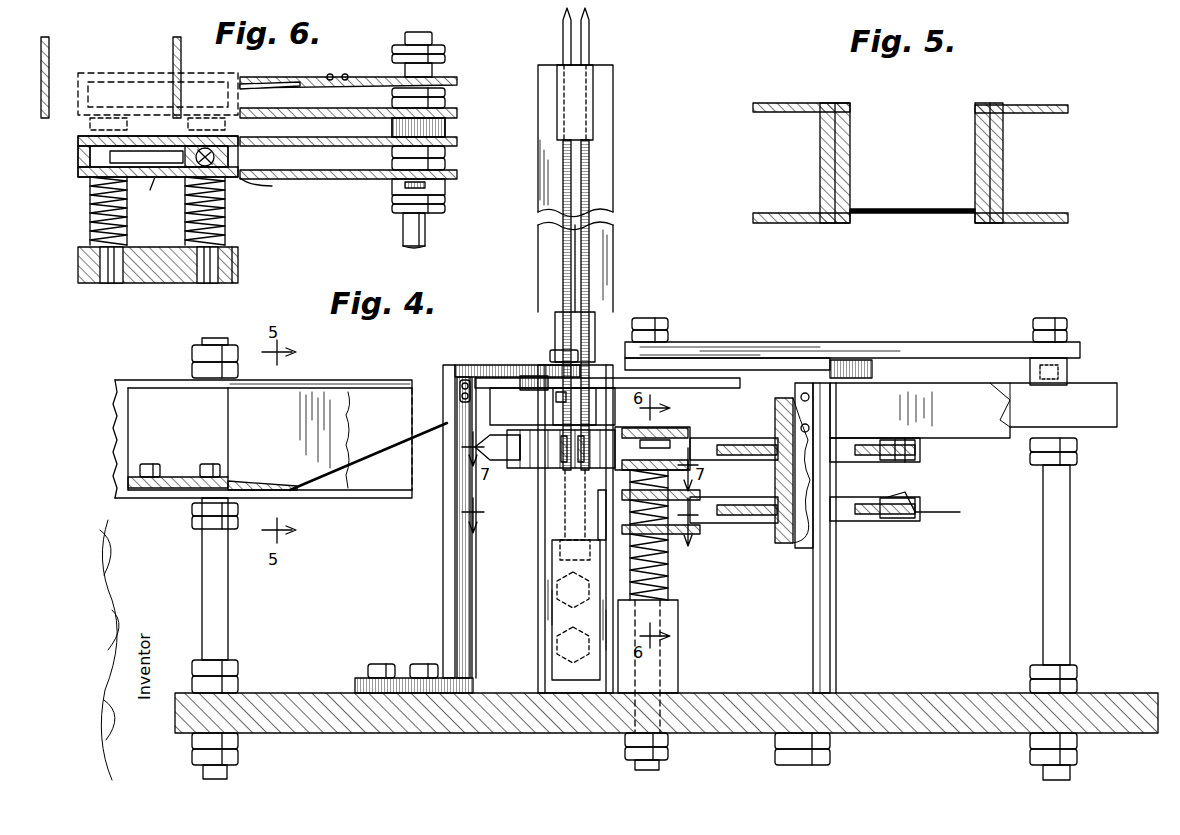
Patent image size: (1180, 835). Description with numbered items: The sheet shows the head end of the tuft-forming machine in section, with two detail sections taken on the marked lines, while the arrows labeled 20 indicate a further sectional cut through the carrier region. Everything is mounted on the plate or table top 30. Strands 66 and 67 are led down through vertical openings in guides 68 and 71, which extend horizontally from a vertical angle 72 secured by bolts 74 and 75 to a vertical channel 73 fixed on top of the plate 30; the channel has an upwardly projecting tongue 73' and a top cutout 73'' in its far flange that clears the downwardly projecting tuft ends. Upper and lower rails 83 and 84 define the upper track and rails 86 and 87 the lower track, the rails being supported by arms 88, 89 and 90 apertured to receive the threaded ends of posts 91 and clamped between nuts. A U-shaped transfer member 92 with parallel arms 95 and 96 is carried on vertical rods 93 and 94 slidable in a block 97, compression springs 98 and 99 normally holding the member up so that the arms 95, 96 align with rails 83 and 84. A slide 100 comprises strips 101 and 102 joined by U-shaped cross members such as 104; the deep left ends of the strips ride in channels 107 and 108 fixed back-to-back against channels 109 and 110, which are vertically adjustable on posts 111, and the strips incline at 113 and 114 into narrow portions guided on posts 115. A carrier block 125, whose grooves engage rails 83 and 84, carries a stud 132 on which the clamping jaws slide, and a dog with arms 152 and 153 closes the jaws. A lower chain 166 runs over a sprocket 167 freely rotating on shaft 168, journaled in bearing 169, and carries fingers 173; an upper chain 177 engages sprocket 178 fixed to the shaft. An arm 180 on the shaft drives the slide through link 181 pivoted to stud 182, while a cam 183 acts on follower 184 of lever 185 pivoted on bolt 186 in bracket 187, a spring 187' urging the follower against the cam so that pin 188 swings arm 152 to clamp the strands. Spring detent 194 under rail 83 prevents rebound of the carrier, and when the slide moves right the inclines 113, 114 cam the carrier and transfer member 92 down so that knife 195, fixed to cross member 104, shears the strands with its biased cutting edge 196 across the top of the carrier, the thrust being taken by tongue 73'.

In FIG. 4, the section line 20- 20 is at (591, 525).
In FIG. 4, the plate or table top 30 is at (875, 693).
In FIG. 4, the strands 66 is at (590, 32).
In FIG. 4, the strands 67 is at (562, 30).
In FIG. 4, the guide 68 is at (596, 94).
In FIG. 4, the guide 71 is at (612, 305).
In FIG. 4, the vertical angle 72 is at (614, 167).
In FIG. 4, the vertical channel 73 is at (550, 610).
In FIG. 4, the upwardly projecting tongue 73' is at (575, 515).
In FIG. 4, the top cutout 73'' is at (537, 515).
In FIG. 4, the bolt 74 is at (573, 590).
In FIG. 4, the bolt 75 is at (573, 645).
In FIG. 6, the upper rail 83 is at (377, 75).
In FIG. 4, the upper rail 83 is at (672, 428).
In FIG. 6, the lower rail 84 is at (371, 107).
In FIG. 4, the lower rail 84 is at (655, 455).
In FIG. 6, the rail 86 is at (360, 136).
In FIG. 4, the rail 86 is at (680, 492).
In FIG. 6, the rail 87 is at (358, 169).
In FIG. 4, the rail 87 is at (676, 540).
In FIG. 6, the arm 88 is at (446, 70).
In FIG. 6, the arm 89 is at (446, 128).
In FIG. 6, the arm 90 is at (446, 190).
In FIG. 6, the post 91 is at (426, 237).
In FIG. 6, the U-shaped transfer member 92 is at (68, 157).
In FIG. 6, the vertical rod 93 is at (76, 261).
In FIG. 6, the vertical rod 94 is at (206, 259).
In FIG. 6, the arm 95 is at (170, 131).
In FIG. 6, the arm 96 is at (153, 192).
In FIG. 6, the block 97 is at (226, 273).
In FIG. 4, the block 97 is at (672, 655).
In FIG. 6, the compression spring 98 is at (88, 206).
In FIG. 6, the compression spring 99 is at (228, 205).
In FIG. 4, the compression spring 99 is at (672, 585).
In FIG. 4, the slide 100 is at (422, 371).
In FIG. 5, the strip 101 is at (851, 128).
In FIG. 4, the strip 101 is at (280, 395).
In FIG. 5, the strip 102 is at (975, 142).
In FIG. 4, the strip 102 is at (448, 365).
In FIG. 4, the U-shaped member 104 is at (218, 416).
In FIG. 5, the channel 107 is at (850, 106).
In FIG. 4, the channel 107 is at (320, 390).
In FIG. 5, the channel 108 is at (983, 79).
In FIG. 5, the channel 109 is at (795, 82).
In FIG. 5, the channel 110 is at (1050, 104).
In FIG. 4, the post 111 is at (230, 600).
In FIG. 4, the incline 113 is at (300, 488).
In FIG. 4, the incline 114 is at (370, 458).
In FIG. 4, the post 115 is at (1072, 490).
In FIG. 6, the block 125 is at (240, 157).
In FIG. 4, the block 125 is at (700, 438).
In FIG. 6, the stud 132 is at (274, 187).
In FIG. 4, the arm 152 is at (497, 462).
In FIG. 4, the arm 153 is at (470, 506).
In FIG. 4, the chain 166 is at (912, 522).
In FIG. 4, the sprocket 167 is at (852, 510).
In FIG. 4, the shaft 168 is at (835, 480).
In FIG. 4, the bearing 169 is at (832, 584).
In FIG. 4, the finger 173 is at (950, 500).
In FIG. 4, the chain 177 is at (912, 462).
In FIG. 4, the sprocket 178 is at (918, 450).
In FIG. 4, the arm 180 is at (745, 358).
In FIG. 4, the link 181 is at (845, 342).
In FIG. 4, the stud 182 is at (1048, 318).
In FIG. 4, the cam 183 is at (874, 370).
In FIG. 4, the follower 184 is at (740, 378).
In FIG. 4, the lever 185 is at (622, 340).
In FIG. 4, the vertical bolt 186 is at (574, 406).
In FIG. 4, the bracket 187 is at (467, 490).
In FIG. 4, the spring 187' is at (496, 361).
In FIG. 4, the pin 188 is at (490, 410).
In FIG. 6, the spring detent 194 is at (255, 88).
In FIG. 5, the knife 195 is at (920, 182).
In FIG. 4, the knife 195 is at (240, 480).
In FIG. 4, the biased cutting edge 196 is at (302, 488).